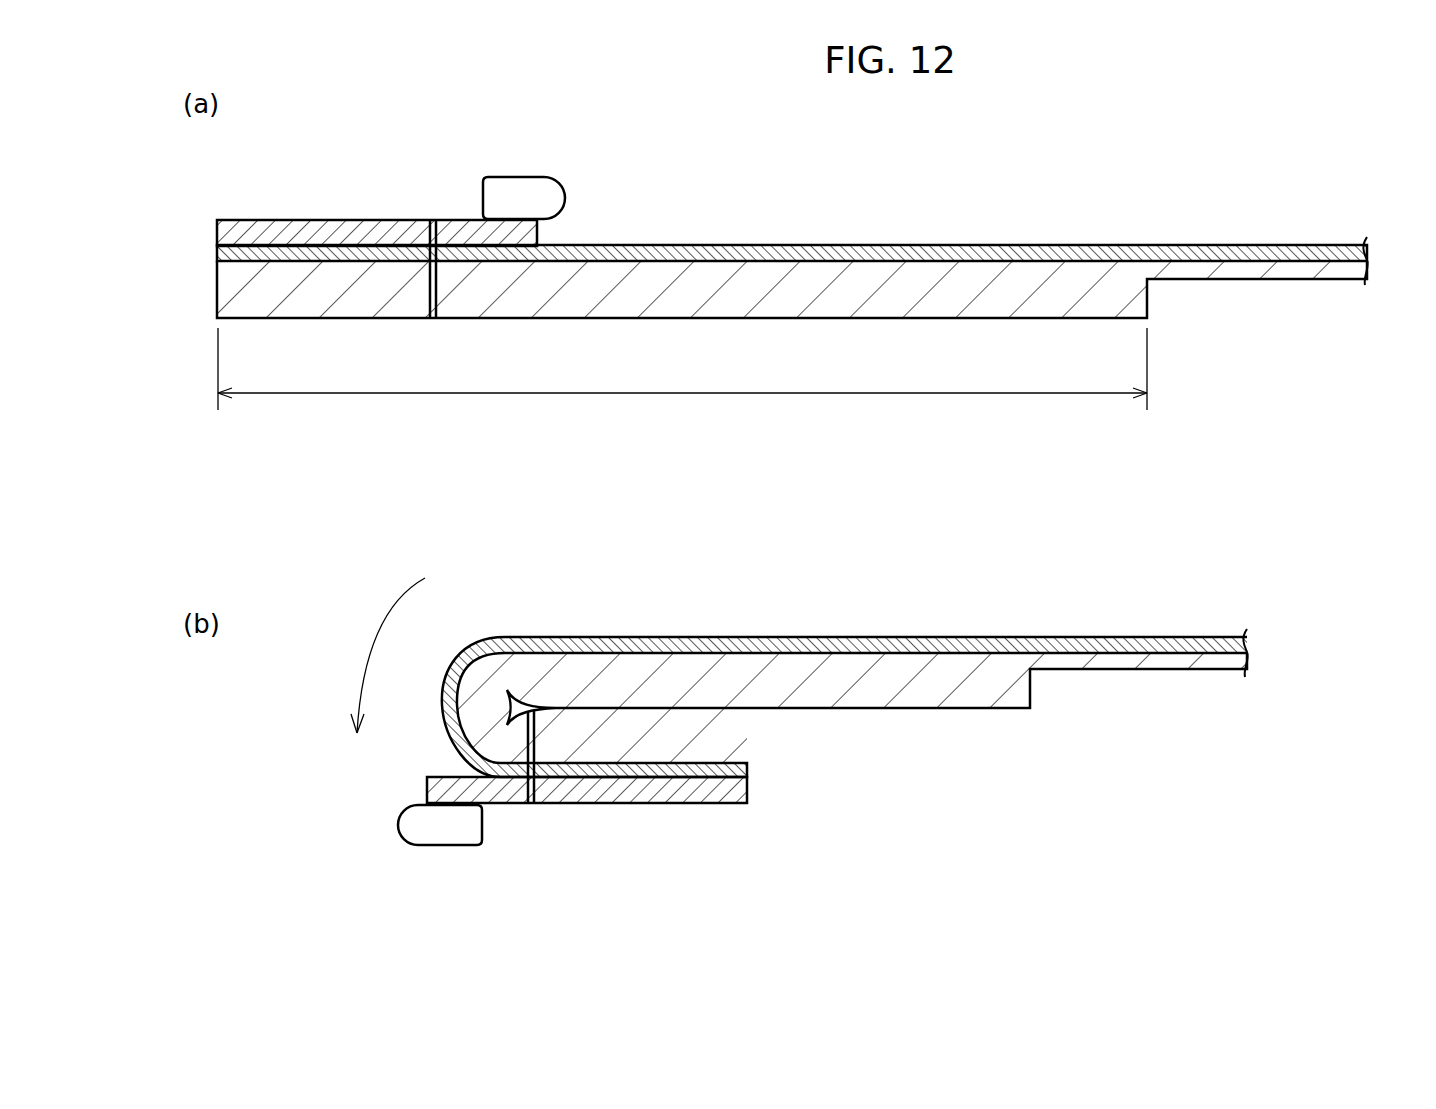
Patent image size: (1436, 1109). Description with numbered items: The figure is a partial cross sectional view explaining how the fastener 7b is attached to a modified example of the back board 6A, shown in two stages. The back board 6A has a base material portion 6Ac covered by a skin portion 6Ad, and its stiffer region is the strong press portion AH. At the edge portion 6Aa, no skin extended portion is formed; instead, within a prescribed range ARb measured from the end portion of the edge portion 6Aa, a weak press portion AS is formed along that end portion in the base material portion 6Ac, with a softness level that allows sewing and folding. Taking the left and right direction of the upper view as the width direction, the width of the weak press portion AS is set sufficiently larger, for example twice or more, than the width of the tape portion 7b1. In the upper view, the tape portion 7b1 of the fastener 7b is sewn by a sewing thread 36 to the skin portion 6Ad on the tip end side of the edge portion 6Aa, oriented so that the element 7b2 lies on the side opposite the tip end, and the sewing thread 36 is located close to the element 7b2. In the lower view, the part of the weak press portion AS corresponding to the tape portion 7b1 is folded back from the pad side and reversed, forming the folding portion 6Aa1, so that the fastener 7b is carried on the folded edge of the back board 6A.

The tape portion 7b1 is at (340, 220).
The element 7b2 is at (523, 190).
The fastener 7b is at (714, 818).
The back board 6A is at (1226, 216).
The edge portion 6Aa is at (860, 232).
The folding portion 6Aa1 is at (740, 745).
The base material portion 6Ac is at (1267, 268).
The skin portion 6Ad is at (1318, 240).
The sewing thread 36 is at (427, 283).
The prescribed range ARb is at (682, 369).
The weak press portion AS is at (1063, 317).
The strong press portion AH is at (1217, 280).